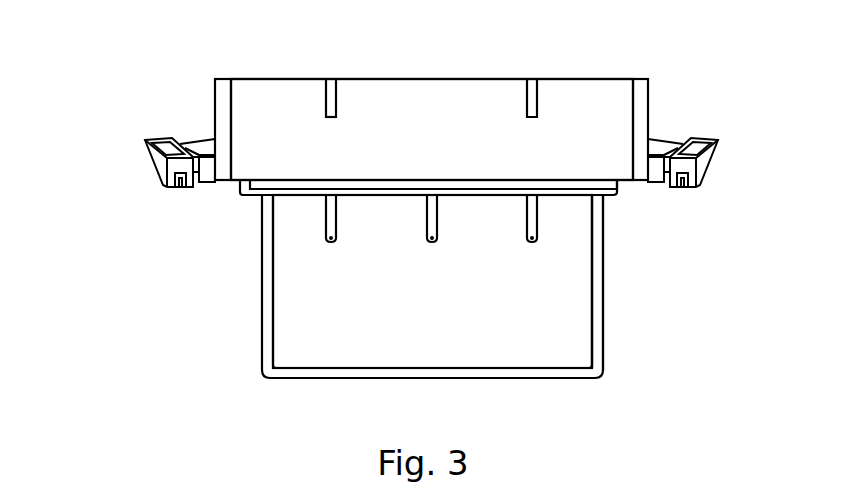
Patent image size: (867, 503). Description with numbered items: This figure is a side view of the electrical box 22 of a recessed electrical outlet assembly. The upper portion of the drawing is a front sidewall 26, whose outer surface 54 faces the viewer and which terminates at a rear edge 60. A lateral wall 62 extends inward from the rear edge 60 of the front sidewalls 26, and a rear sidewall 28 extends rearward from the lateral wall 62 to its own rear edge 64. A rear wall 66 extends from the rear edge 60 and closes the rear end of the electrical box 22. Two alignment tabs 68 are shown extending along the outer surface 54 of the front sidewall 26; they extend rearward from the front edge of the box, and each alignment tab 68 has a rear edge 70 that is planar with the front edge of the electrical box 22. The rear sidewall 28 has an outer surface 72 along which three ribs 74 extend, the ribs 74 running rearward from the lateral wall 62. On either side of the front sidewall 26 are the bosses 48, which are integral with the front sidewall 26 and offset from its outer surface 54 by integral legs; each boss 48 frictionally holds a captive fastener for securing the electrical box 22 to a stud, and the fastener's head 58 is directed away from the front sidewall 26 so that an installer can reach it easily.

The electrical box 22 is at (133, 80).
The front sidewall 26 is at (612, 118).
The rear sidewall 28 is at (568, 312).
The boss 48 is at (158, 165).
The outer surface 54 is at (432, 129).
The head 58 is at (578, 79).
The rear edge 60 is at (567, 197).
The lateral wall 62 is at (287, 191).
The rear edge 64 is at (548, 373).
The rear wall 66 is at (326, 372).
The alignment tab 68 is at (325, 100).
The rear edge 70 is at (331, 128).
The outer surface 72 is at (432, 281).
The rib 74 is at (338, 214).